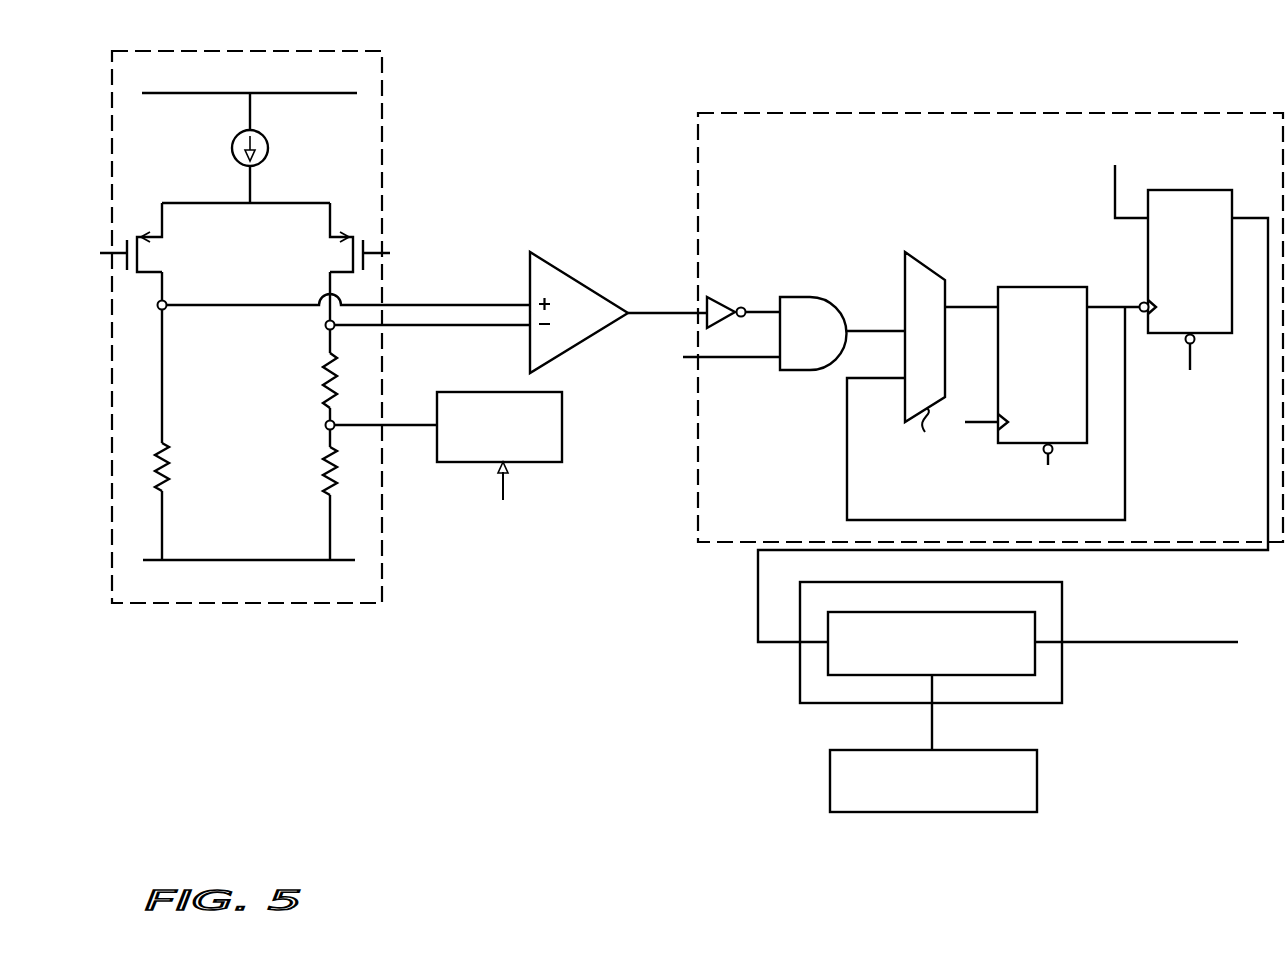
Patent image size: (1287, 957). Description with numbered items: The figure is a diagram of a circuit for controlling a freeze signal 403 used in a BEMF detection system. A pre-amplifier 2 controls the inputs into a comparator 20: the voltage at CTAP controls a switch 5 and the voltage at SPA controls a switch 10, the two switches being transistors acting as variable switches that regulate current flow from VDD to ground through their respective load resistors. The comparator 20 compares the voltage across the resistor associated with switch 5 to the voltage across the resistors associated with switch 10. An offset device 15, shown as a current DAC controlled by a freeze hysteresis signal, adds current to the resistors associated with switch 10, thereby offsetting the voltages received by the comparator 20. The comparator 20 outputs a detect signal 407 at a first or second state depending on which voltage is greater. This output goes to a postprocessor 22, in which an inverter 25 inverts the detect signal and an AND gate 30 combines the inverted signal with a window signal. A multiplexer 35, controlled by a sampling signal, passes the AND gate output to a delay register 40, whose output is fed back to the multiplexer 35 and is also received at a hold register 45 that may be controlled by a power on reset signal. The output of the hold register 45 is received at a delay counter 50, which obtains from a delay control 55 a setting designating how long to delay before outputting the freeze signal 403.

The pre-amplifier 2 is at (112, 68).
The switch 5 is at (150, 210).
The switch 10 is at (344, 216).
The offset device 15 is at (562, 446).
The comparator 20 is at (575, 218).
The postprocessor 22 is at (697, 142).
The inverter 25 is at (708, 296).
The AND gate 30 is at (800, 296).
The multiplexer 35 is at (920, 258).
The delay register 40 is at (1062, 377).
The hold register 45 is at (1205, 275).
The delay counter 50 is at (1036, 612).
The delay control 55 is at (830, 769).
The freeze signal 403 is at (1157, 630).
The detect signal 407 is at (667, 296).